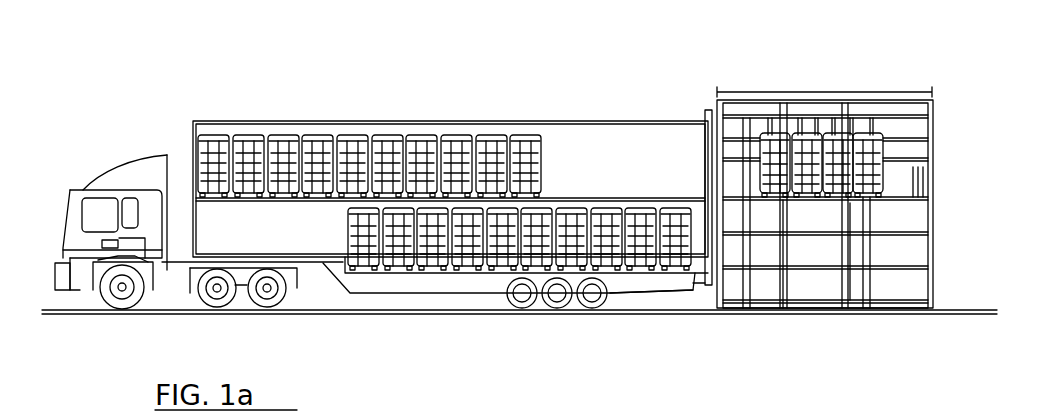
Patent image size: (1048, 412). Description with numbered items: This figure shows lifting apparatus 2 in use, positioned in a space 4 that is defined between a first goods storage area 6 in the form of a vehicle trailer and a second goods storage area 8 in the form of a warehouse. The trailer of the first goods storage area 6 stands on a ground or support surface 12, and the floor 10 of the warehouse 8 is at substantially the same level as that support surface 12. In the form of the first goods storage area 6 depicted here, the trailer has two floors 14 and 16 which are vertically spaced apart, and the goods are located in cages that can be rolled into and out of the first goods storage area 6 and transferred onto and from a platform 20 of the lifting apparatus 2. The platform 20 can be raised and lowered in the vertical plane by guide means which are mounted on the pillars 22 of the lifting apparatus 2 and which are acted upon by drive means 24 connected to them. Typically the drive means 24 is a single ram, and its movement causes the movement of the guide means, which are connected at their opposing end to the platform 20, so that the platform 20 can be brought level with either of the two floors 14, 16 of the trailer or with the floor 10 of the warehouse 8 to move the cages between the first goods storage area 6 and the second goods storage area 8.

The lifting apparatus 2 is at (830, 292).
The space 4 is at (835, 90).
The first goods storage area 6 is at (471, 121).
The second goods storage area 8 is at (1001, 226).
The floor 10 is at (980, 315).
The ground or support surface 12 is at (572, 315).
The floor 14 is at (632, 197).
The floor 16 is at (643, 275).
The platform 20 is at (806, 203).
The pillars 22 is at (748, 300).
The drive means 24 is at (916, 181).